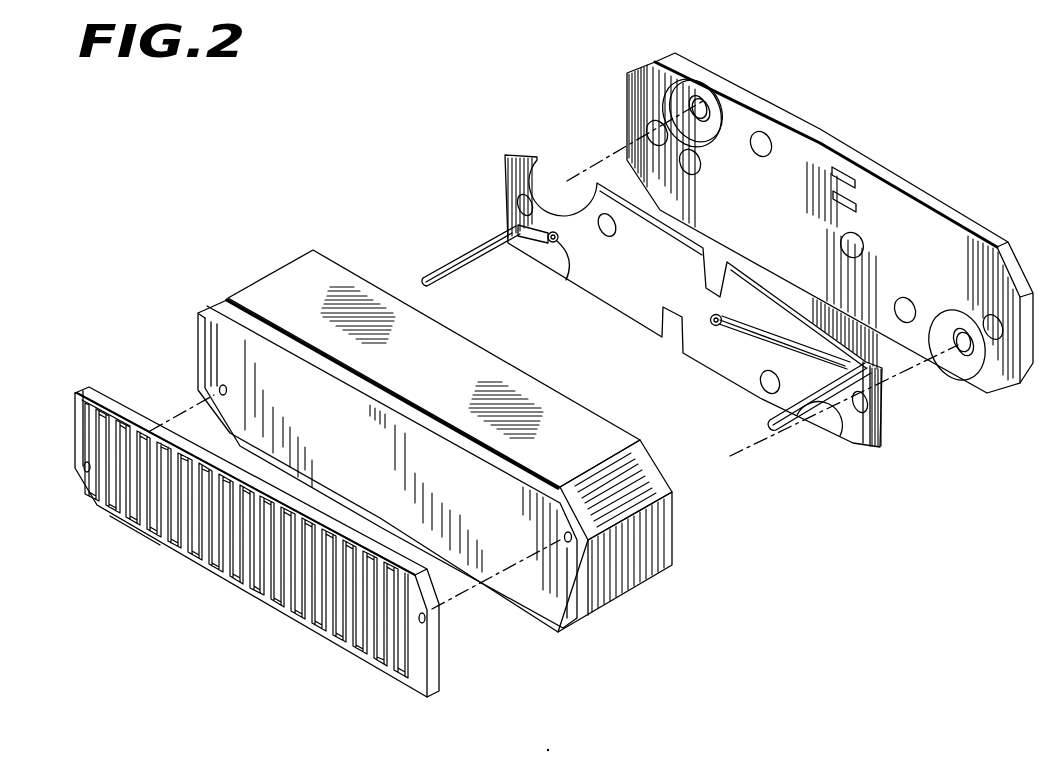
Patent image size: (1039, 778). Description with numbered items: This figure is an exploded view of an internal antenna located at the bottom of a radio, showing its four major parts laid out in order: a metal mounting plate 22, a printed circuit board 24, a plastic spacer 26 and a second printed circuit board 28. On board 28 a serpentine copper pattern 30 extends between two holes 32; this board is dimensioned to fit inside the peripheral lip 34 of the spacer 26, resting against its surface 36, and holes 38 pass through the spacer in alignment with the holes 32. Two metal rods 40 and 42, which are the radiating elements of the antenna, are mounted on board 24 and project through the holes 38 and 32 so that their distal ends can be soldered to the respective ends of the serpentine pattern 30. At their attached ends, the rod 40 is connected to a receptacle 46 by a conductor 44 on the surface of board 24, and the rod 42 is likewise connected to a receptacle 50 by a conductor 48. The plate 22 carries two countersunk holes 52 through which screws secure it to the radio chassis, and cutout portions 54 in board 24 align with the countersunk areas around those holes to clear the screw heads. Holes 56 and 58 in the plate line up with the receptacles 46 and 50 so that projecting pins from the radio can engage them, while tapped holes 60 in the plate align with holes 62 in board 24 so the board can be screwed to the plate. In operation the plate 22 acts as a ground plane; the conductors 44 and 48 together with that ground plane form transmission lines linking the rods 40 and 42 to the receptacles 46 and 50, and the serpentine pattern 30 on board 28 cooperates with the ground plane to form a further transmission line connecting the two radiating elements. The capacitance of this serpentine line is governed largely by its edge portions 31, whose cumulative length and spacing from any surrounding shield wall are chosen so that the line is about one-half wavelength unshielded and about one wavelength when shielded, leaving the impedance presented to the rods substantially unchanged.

The metal mounting plate 22 is at (952, 216).
The printed circuit board 24 is at (510, 153).
The plastic spacer 26 is at (355, 276).
The printed circuit board 28 is at (99, 388).
The serpentine copper pattern 30 is at (293, 617).
The edge portions 31 is at (137, 414).
The holes 32 is at (84, 476).
The peripheral lip 34 is at (204, 310).
The surface 36 is at (226, 339).
The holes 38 is at (216, 392).
The metal rod 40 is at (802, 424).
The metal rod 42 is at (452, 265).
The conductor 44 is at (752, 332).
The receptacle 46 is at (700, 355).
The conductor 48 is at (537, 247).
The receptacle 50 is at (561, 276).
The countersunk holes 52 is at (690, 104).
The cutout portions 54 is at (547, 172).
The hole 56 is at (866, 247).
The hole 58 is at (700, 170).
The tapped holes 60 is at (765, 138).
The holes 62 is at (607, 238).